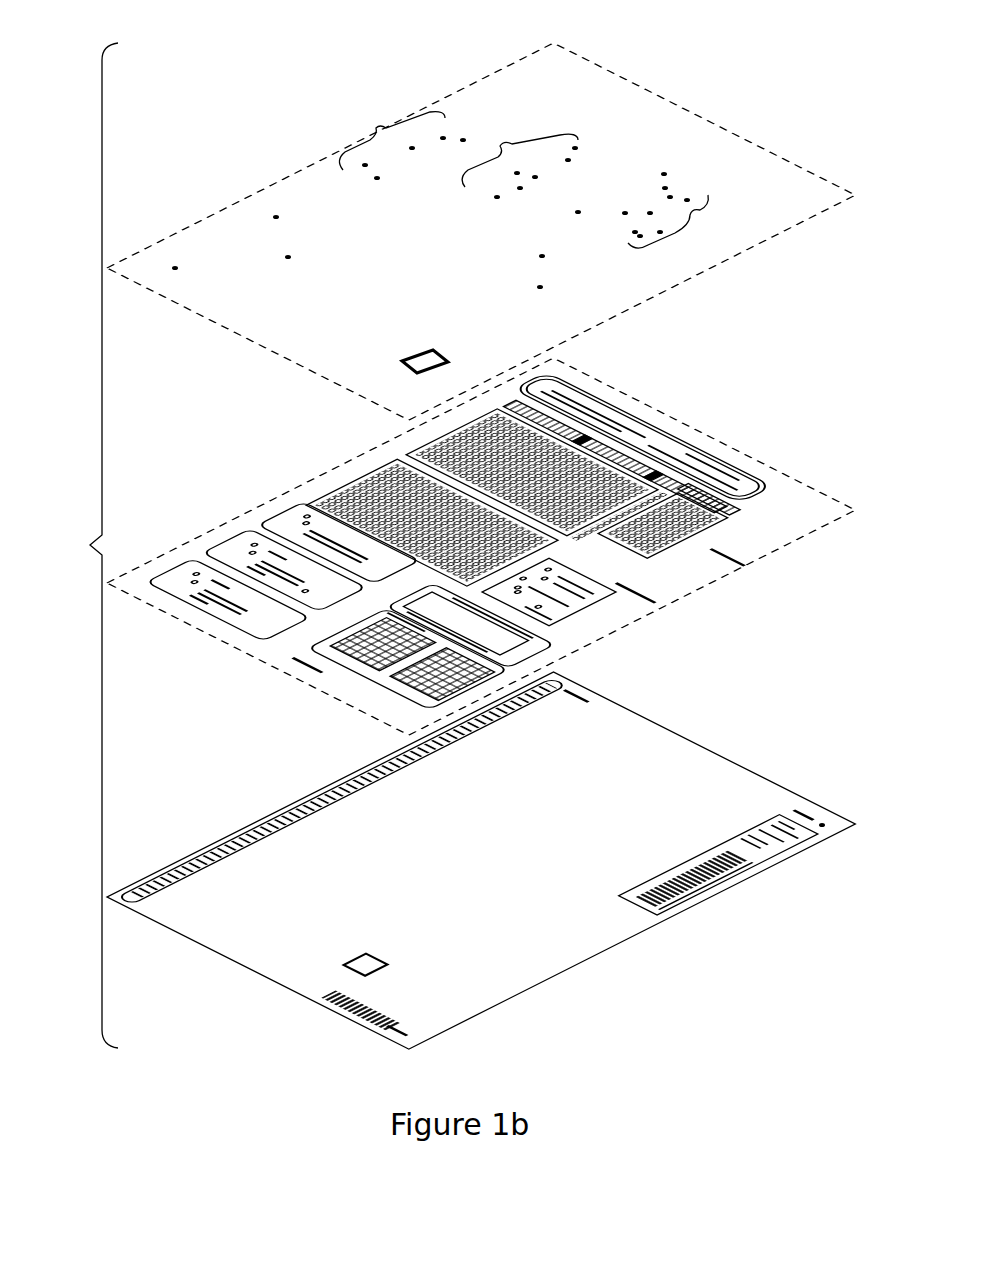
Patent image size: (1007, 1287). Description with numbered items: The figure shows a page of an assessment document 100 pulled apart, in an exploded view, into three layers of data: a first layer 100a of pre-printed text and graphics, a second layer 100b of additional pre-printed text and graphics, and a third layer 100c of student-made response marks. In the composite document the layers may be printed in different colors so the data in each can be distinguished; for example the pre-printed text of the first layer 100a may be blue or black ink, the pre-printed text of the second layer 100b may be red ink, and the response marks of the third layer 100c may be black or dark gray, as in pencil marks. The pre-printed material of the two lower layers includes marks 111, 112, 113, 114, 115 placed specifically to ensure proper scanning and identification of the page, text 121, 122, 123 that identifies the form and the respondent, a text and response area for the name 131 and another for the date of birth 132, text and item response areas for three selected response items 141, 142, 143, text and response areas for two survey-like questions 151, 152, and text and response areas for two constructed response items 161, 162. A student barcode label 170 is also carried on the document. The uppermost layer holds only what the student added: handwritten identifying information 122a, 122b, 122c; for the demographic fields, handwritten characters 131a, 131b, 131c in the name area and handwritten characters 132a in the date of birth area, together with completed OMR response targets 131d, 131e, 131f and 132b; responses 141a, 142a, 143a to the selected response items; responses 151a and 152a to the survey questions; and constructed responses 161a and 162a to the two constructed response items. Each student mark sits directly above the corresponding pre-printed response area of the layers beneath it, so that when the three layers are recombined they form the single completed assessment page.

The assessment document 100 is at (81, 545).
The first layer 100a is at (595, 958).
The second layer 100b is at (698, 420).
The third layer 100c is at (307, 165).
The scanning and identification mark 111 is at (278, 816).
The scanning and identification mark 112 is at (578, 697).
The scanning and identification mark 113 is at (803, 812).
The scanning and identification mark 114 is at (400, 1033).
The scanning and identification mark 115 is at (332, 1000).
The form and respondent identifying text 121 is at (715, 768).
The form and respondent identifying text 122 is at (715, 475).
The handwritten identifying information 122a is at (612, 100).
The handwritten identifying information 122b is at (736, 170).
The handwritten identifying information 122c is at (582, 100).
The form and respondent identifying text 123 is at (290, 660).
The name response area 131 is at (360, 478).
The handwritten character 131a is at (515, 95).
The handwritten character 131b is at (590, 137).
The handwritten character 131c is at (663, 172).
The completed OMR response target 131d is at (402, 140).
The completed OMR response target 131e is at (520, 160).
The completed OMR response target 131f is at (578, 212).
The date of birth response area 132 is at (740, 500).
The handwritten characters 132a is at (722, 205).
The completed OMR response targets 132b is at (678, 223).
The selected response item area 141 is at (265, 525).
The selected response item response 141a is at (275, 216).
The selected response item area 142 is at (218, 545).
The selected response item response 142a is at (290, 257).
The selected response item area 143 is at (170, 565).
The selected response item response 143a is at (175, 267).
The survey question response area 151 is at (620, 600).
The survey question response 151a is at (542, 255).
The survey question response area 152 is at (585, 610).
The survey question response 152a is at (541, 286).
The constructed response item area 161 is at (535, 690).
The constructed response 161a is at (445, 300).
The constructed response item area 162 is at (345, 672).
The constructed response 162a is at (405, 352).
The student barcode label 170 is at (703, 850).